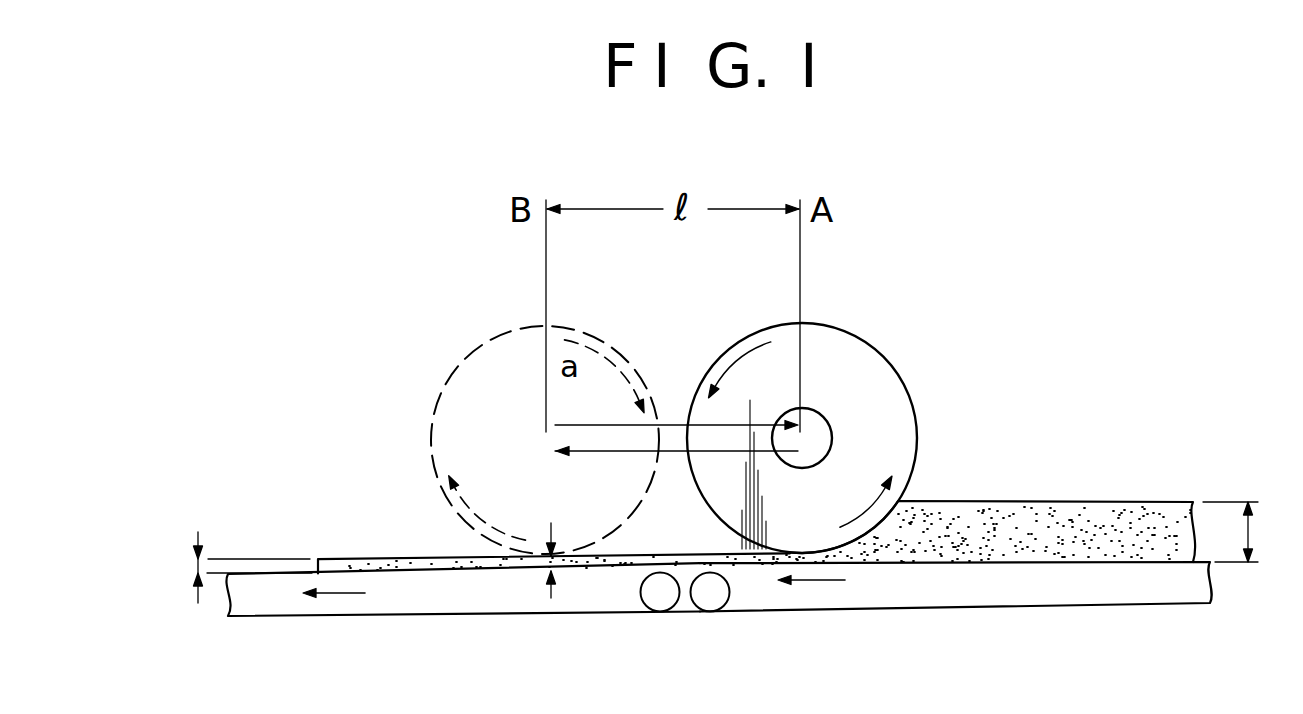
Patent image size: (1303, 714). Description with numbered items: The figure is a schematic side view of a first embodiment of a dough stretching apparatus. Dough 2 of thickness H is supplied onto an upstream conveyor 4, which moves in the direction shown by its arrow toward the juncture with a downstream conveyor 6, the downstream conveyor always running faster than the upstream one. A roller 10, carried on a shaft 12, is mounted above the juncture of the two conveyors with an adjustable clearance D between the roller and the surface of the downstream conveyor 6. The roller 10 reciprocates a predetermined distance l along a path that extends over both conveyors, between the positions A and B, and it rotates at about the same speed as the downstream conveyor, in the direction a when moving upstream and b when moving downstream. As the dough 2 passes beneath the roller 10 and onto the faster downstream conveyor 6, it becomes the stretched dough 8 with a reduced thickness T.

The dough 2 is at (1132, 502).
The upstream conveyor 4 is at (958, 593).
The downstream conveyor 6 is at (442, 602).
The stretched dough 8 is at (352, 559).
The roller 10 is at (862, 335).
The shaft 12 is at (831, 430).